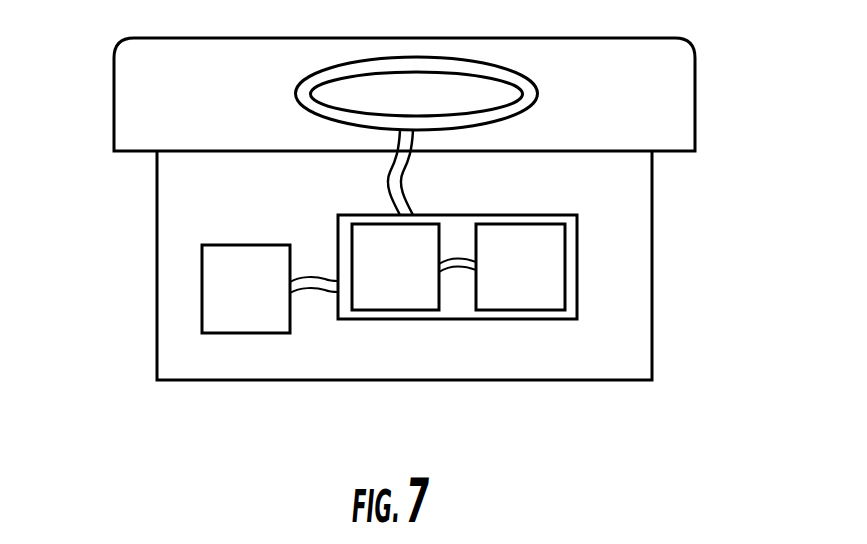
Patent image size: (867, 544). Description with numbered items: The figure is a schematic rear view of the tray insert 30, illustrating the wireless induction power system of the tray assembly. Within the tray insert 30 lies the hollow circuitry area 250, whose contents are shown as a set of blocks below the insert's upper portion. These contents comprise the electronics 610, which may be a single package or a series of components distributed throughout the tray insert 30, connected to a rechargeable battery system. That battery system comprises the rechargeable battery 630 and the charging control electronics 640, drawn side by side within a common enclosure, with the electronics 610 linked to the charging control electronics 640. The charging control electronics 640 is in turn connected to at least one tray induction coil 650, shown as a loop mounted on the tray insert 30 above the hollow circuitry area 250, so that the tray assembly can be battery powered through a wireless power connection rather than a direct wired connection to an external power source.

The tray insert 30 is at (112, 85).
The hollow circuitry area 250 is at (199, 225).
The tray induction coil 650 is at (539, 96).
The electronics 610 is at (243, 333).
The charging control electronics 640 is at (390, 310).
The rechargeable battery 630 is at (525, 310).